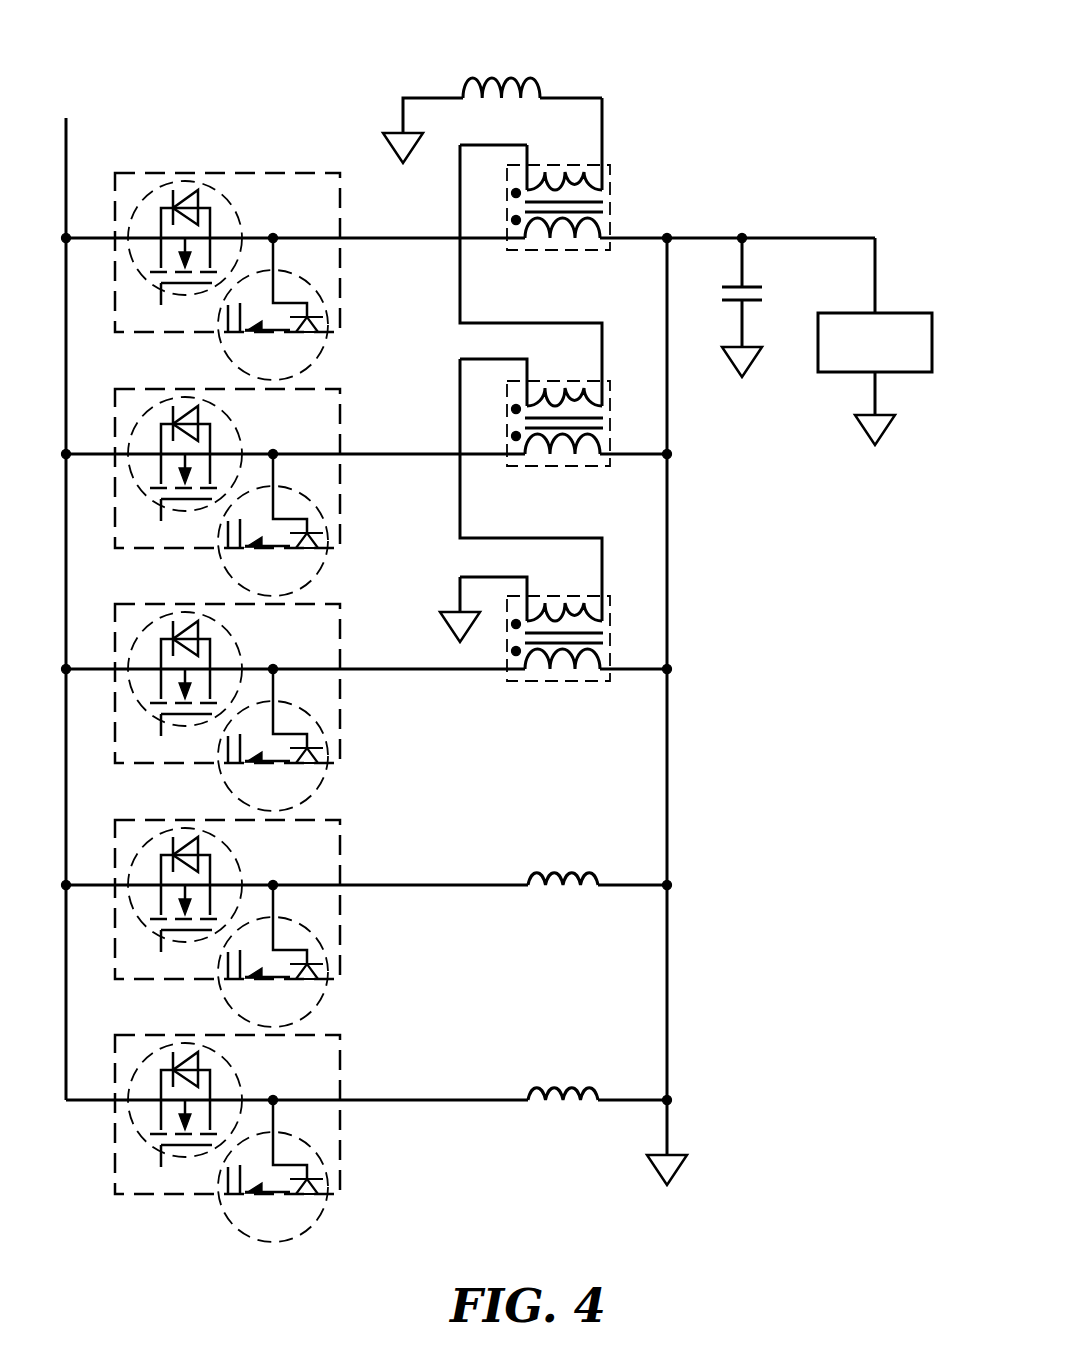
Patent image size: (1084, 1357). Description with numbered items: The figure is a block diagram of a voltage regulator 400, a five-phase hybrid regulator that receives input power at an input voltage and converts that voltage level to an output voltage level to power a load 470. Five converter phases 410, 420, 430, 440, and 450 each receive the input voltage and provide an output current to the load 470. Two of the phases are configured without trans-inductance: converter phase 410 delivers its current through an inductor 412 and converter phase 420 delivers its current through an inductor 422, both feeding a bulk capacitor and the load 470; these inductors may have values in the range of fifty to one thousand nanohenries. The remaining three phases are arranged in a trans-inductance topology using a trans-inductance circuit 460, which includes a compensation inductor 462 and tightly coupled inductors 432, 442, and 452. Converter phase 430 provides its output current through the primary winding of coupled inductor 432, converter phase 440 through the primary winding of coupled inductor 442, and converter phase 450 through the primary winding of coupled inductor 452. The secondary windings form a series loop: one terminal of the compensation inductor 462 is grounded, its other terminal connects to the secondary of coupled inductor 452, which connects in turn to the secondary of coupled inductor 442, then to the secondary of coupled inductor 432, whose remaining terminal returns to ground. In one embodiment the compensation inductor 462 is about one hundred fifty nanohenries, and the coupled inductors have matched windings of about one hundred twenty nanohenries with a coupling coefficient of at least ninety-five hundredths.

The voltage regulator 400 is at (106, 1297).
The converter phase 410 is at (130, 1035).
The inductor 412 is at (590, 1083).
The converter phase 420 is at (130, 820).
The inductor 422 is at (590, 868).
The converter phase 430 is at (130, 604).
The coupled inductor 432 is at (608, 598).
The converter phase 440 is at (130, 389).
The coupled inductor 442 is at (608, 383).
The converter phase 450 is at (130, 173).
The coupled inductor 452 is at (608, 167).
The trans-inductance circuit 460 is at (452, 70).
The compensation inductor 462 is at (542, 88).
The load 470 is at (918, 313).